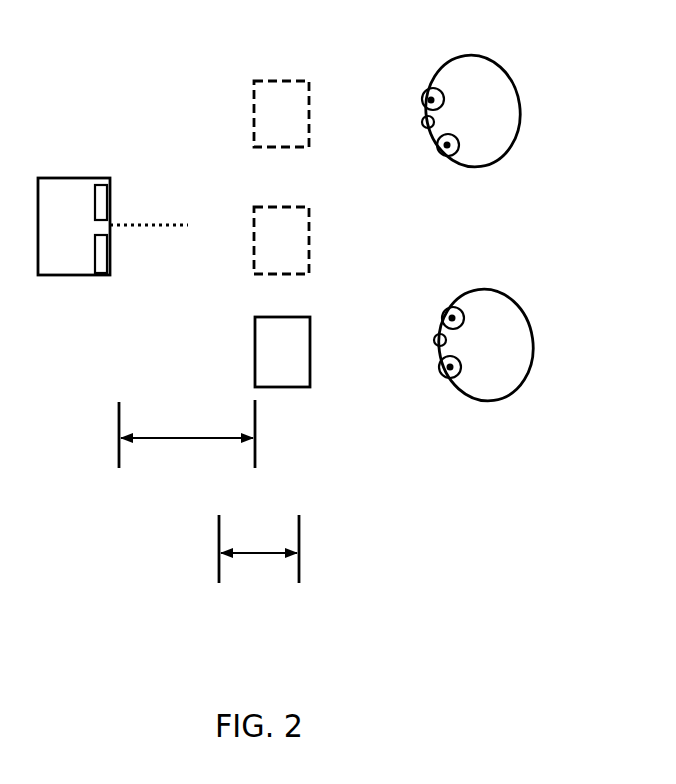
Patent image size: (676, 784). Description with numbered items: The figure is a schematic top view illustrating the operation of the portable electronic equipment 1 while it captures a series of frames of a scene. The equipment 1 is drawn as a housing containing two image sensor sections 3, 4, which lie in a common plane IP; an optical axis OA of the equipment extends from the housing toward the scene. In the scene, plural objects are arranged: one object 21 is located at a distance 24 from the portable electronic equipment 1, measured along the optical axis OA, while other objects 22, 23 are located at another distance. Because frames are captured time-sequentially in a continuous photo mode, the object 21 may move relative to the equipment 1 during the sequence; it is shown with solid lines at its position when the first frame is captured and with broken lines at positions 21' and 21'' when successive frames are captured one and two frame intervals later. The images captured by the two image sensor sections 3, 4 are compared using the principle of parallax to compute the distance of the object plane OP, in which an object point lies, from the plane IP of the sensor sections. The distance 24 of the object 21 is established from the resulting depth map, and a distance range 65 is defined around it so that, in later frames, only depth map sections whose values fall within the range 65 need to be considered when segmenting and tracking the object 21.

The portable electronic equipment 1 is at (40, 270).
The image sensor section 3 is at (101, 190).
The image sensor section 4 is at (101, 268).
The optical axis OA is at (151, 225).
The object 21 is at (260, 355).
The object position at time 1·Tr 21' is at (256, 242).
The object position at time 2·Tr 21'' is at (251, 114).
The object 22 is at (511, 88).
The object 23 is at (522, 312).
The distance 24 is at (185, 438).
The distance range 65 is at (256, 553).
The image sensor plane IP is at (117, 460).
The object plane OP is at (255, 455).